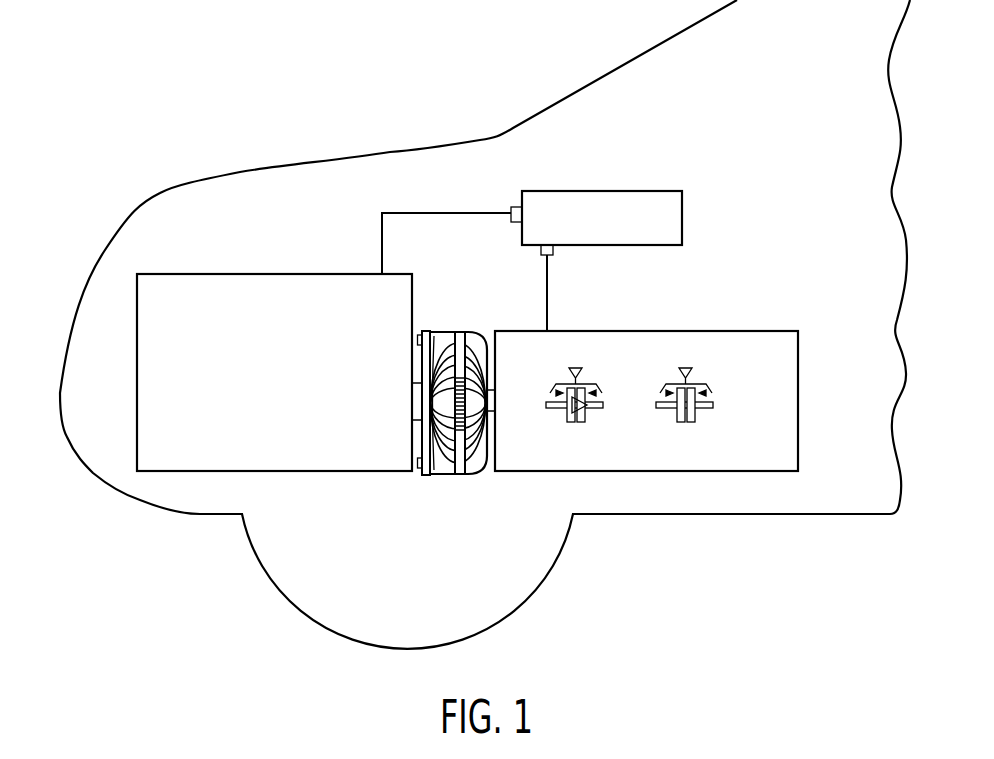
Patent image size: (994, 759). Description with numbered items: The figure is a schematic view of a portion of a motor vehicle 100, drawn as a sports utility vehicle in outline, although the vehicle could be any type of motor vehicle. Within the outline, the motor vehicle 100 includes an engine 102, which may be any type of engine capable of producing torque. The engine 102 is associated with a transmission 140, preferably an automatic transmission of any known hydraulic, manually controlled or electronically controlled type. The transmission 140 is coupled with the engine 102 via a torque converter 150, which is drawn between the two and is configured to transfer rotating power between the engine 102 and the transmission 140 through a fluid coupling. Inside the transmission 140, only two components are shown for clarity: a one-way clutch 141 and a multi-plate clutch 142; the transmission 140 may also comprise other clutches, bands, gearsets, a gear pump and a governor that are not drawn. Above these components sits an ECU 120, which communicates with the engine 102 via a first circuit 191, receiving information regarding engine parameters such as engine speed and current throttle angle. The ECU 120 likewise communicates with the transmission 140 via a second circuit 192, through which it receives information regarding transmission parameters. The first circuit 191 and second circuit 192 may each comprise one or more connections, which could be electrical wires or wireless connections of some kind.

The motor vehicle 100 is at (477, 67).
The engine 102 is at (267, 265).
The ECU 120 is at (694, 181).
The transmission 140 is at (797, 310).
The one-way clutch 141 is at (604, 416).
The multi-plate clutch 142 is at (705, 414).
The torque converter 150 is at (459, 486).
The first circuit 191 is at (476, 212).
The second circuit 192 is at (548, 295).